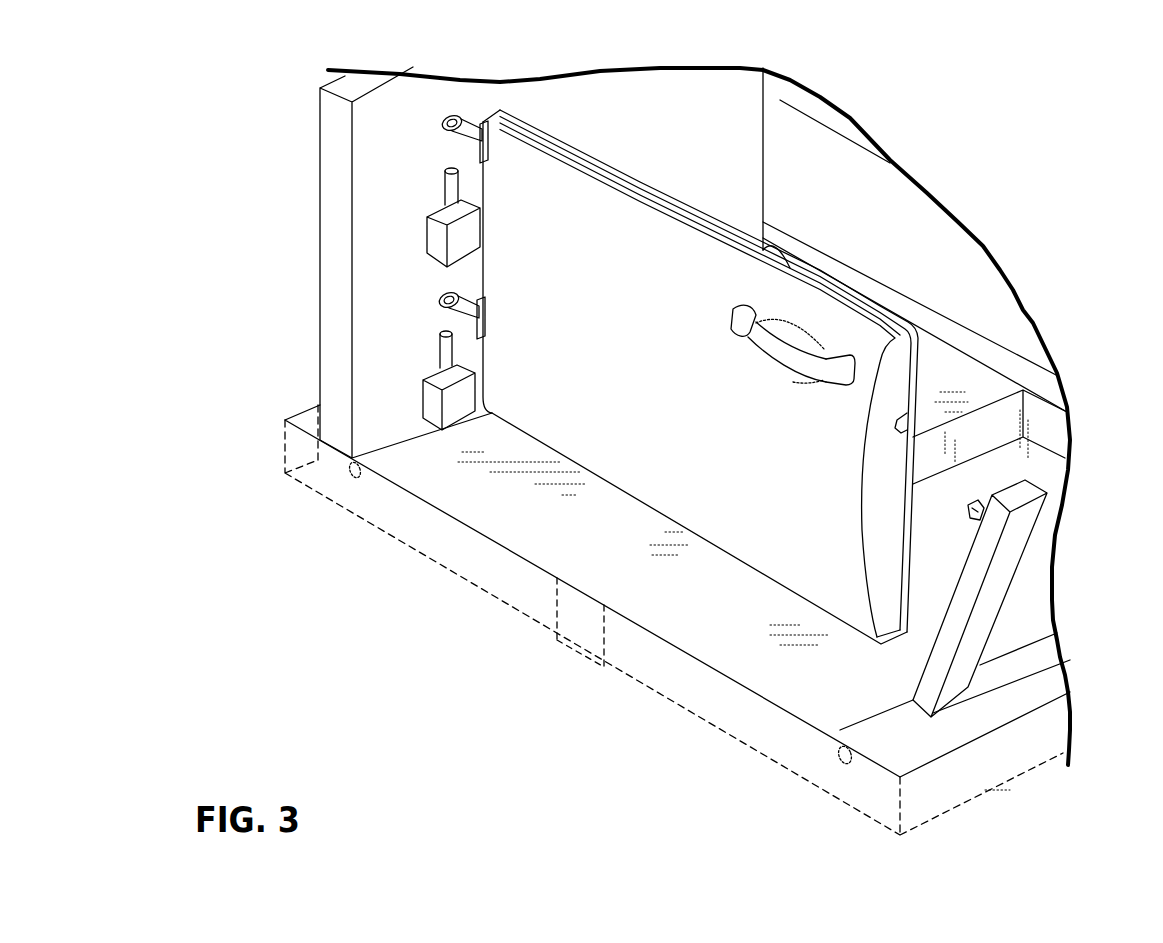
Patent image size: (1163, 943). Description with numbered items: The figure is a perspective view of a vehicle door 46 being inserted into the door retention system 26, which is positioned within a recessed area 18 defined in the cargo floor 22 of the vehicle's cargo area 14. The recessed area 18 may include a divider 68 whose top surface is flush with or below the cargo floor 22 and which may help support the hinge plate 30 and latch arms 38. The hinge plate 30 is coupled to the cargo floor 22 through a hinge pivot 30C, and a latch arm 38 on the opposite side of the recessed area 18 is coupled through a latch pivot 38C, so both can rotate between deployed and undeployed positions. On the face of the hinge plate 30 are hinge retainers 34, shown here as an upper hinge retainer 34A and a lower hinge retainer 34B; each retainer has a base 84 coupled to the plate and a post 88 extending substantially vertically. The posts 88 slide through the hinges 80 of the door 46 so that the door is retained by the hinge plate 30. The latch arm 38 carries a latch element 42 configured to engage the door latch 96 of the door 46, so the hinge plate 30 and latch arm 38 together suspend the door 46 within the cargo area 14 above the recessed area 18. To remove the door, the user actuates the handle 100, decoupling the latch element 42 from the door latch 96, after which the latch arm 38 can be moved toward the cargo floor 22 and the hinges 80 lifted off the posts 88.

The cargo area 14 is at (1027, 160).
The recessed area 18 is at (503, 490).
The cargo floor 22 is at (940, 737).
The door retention system 26 is at (1075, 420).
The hinge plate 30 is at (723, 123).
The hinge pivot 30C is at (392, 452).
The hinge retainer 34 is at (339, 285).
The upper hinge retainer 34A is at (345, 208).
The lower hinge retainer 34B is at (420, 372).
The latch arm 38 is at (997, 575).
The latch pivot 38C is at (863, 738).
The latch element 42 is at (973, 507).
The vehicle door 46 is at (665, 285).
The divider 68 is at (672, 518).
The hinge 80 is at (441, 120).
The base 84 is at (435, 238).
The post 88 is at (447, 183).
The door latch 96 is at (913, 428).
The handle 100 is at (785, 362).